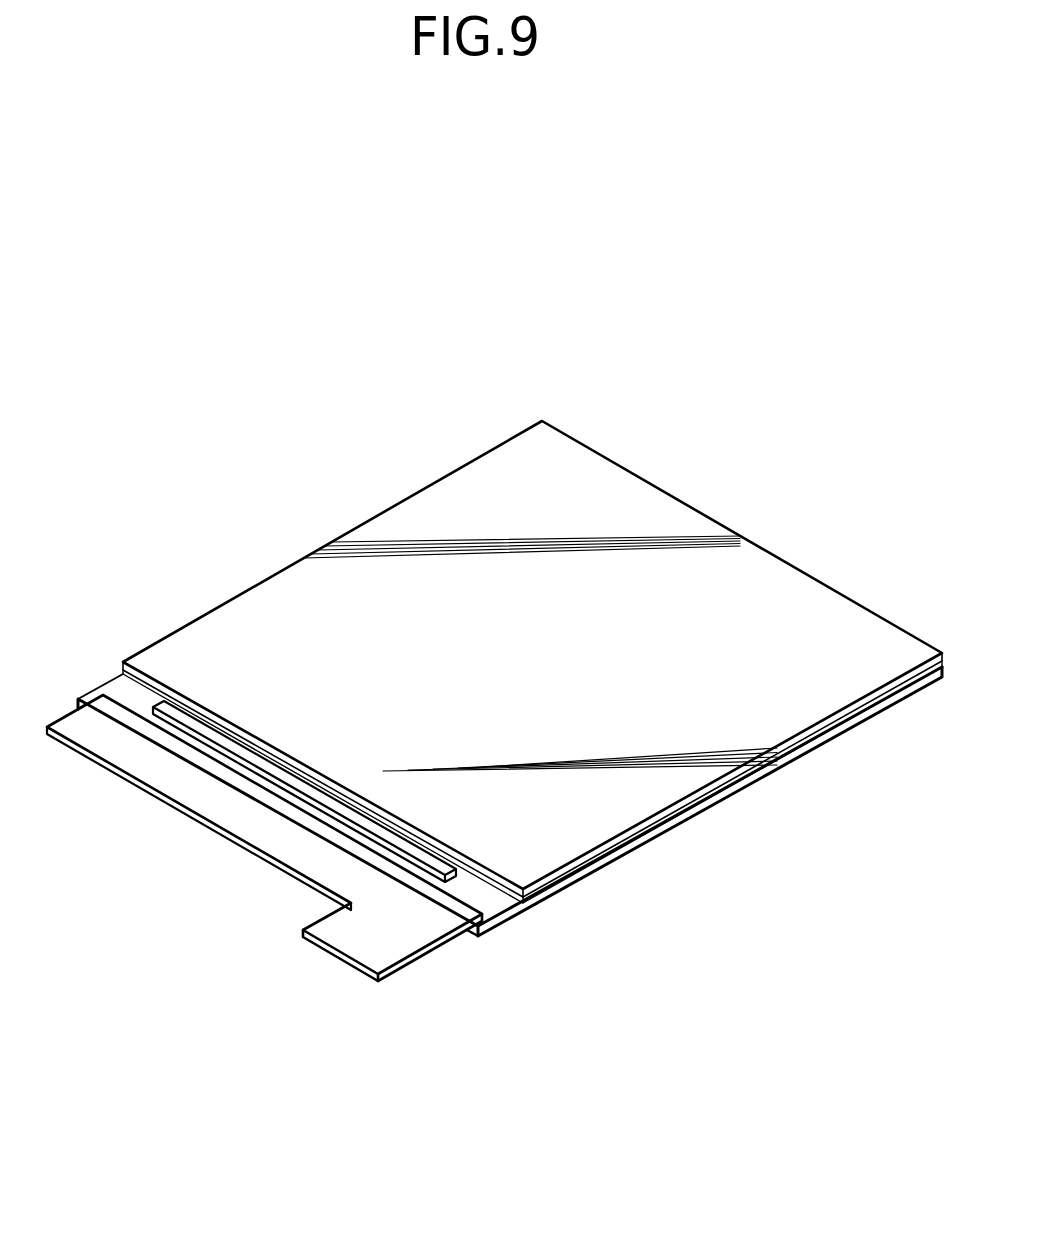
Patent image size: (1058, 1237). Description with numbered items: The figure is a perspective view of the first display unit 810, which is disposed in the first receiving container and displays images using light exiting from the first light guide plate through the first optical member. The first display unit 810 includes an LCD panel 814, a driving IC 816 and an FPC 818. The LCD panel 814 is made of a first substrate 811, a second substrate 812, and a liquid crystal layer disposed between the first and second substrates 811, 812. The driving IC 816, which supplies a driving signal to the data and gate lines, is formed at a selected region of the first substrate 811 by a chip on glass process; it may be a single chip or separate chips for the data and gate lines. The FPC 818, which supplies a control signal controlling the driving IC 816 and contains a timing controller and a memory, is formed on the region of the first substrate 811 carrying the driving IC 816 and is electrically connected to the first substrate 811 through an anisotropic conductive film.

The first display unit 810 is at (613, 429).
The first substrate 811 is at (490, 905).
The second substrate 812 is at (538, 866).
The LCD panel 814 is at (693, 965).
The driving IC 816 is at (186, 720).
The FPC 818 is at (407, 938).